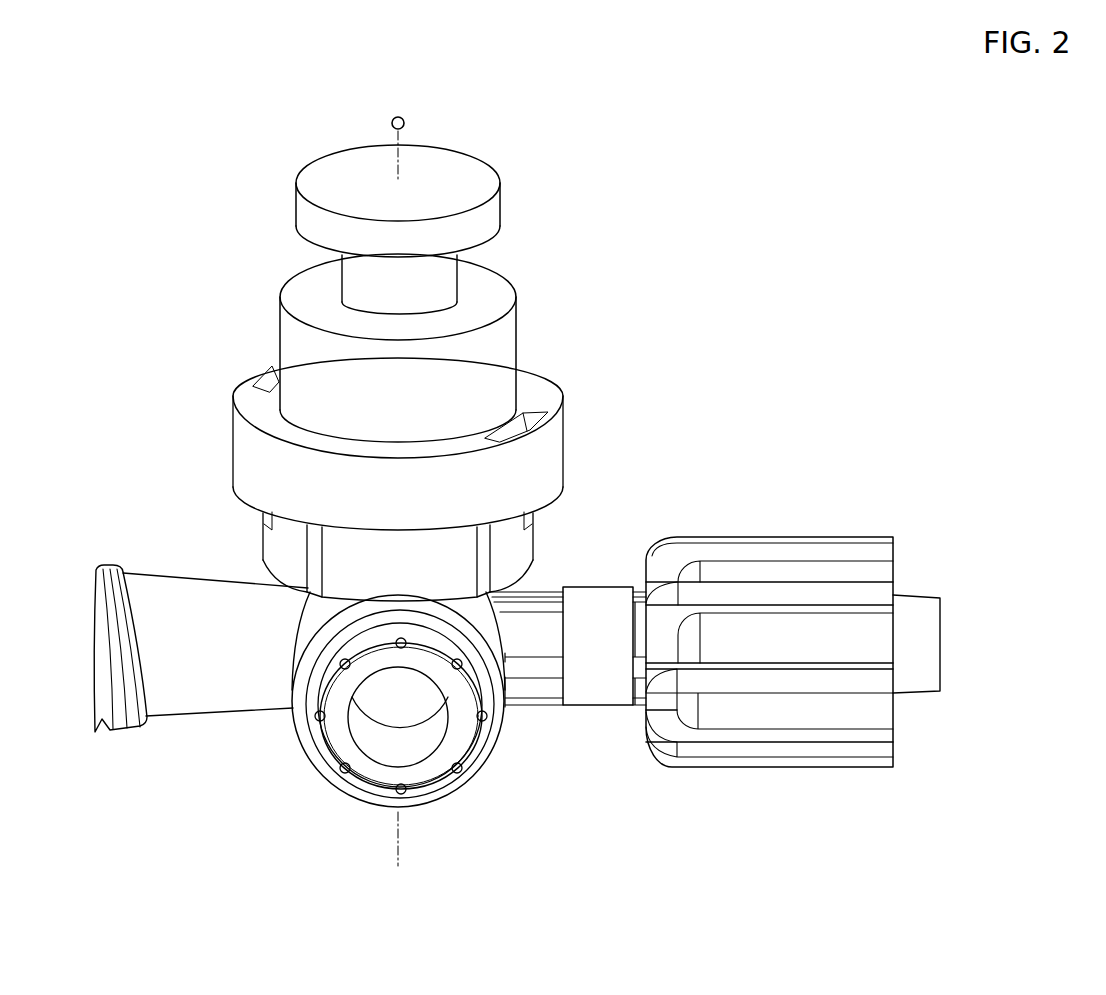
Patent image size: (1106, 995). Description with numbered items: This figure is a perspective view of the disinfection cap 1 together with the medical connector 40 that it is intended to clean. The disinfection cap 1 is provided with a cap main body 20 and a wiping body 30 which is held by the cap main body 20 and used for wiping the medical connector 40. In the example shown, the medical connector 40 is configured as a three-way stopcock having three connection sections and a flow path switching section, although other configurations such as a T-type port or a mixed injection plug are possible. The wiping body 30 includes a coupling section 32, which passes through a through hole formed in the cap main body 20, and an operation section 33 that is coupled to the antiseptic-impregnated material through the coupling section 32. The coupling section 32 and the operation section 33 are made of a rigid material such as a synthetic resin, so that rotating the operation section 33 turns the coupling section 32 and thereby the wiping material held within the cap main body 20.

The disinfection cap 1 is at (628, 268).
The cap main body 20 is at (520, 330).
The wiping body 30 is at (504, 205).
The coupling section 32 is at (443, 277).
The operation section 33 is at (470, 167).
The medical connector 40 is at (596, 536).